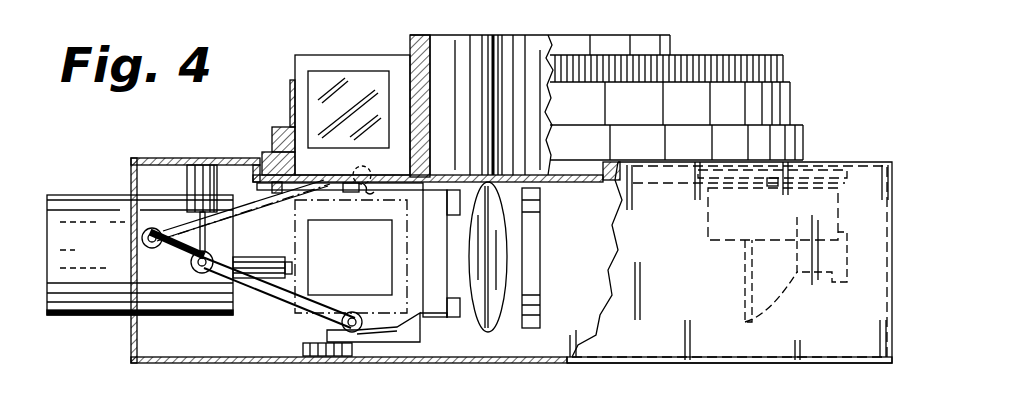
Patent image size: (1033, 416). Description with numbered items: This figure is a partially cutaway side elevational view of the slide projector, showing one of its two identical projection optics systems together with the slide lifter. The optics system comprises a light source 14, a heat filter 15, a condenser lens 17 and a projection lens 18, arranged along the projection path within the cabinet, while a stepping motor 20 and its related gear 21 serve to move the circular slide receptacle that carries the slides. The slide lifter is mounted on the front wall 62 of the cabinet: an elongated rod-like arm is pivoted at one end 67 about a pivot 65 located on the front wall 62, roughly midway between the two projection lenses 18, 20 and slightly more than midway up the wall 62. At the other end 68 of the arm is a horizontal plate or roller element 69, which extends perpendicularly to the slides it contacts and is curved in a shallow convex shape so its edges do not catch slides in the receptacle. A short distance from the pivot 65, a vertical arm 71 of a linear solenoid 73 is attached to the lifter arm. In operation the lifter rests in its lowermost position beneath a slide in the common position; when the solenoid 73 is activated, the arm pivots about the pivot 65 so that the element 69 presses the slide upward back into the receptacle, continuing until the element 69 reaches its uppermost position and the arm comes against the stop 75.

The light source 14 is at (772, 292).
The heat filter 15 is at (535, 272).
The condenser lens 17 is at (500, 310).
The projection lens 18 is at (65, 208).
The stepping motor 20 is at (845, 215).
The gear 21 is at (863, 158).
The front wall 62 is at (130, 323).
The pivot 65 is at (135, 253).
The end of arm 67 is at (140, 238).
The other end of arm 68 is at (338, 323).
The roller element 69 is at (367, 200).
The vertical arm 71 is at (202, 273).
The linear solenoid 73 is at (193, 185).
The stop 75 is at (262, 188).